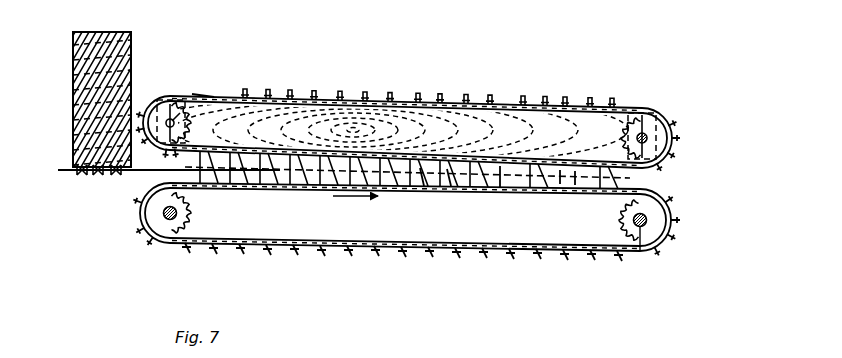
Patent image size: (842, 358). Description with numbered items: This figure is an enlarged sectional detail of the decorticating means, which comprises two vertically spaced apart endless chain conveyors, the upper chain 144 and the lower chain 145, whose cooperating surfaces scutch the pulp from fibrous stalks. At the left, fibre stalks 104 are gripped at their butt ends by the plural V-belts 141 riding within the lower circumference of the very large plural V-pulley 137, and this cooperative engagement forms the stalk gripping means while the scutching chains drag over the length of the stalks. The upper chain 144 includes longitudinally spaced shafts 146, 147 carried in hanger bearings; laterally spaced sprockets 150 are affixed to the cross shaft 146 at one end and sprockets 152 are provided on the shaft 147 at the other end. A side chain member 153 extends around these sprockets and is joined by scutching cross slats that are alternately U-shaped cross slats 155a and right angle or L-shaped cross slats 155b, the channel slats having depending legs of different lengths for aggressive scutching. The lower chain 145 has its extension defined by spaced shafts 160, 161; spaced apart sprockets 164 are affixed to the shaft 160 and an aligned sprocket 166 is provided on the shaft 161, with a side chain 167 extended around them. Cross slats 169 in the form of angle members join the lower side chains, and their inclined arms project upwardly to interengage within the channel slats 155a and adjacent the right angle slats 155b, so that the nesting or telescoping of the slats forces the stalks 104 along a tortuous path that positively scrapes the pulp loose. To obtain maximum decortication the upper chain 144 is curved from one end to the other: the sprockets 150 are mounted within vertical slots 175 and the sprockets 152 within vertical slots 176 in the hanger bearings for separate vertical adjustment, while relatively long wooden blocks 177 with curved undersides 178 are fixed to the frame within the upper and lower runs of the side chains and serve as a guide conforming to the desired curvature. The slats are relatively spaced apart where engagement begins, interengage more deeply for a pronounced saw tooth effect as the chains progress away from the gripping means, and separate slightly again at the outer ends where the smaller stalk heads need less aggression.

The fibre stalks 104 is at (67, 172).
The plural V-pulley 137 is at (136, 46).
The plural V-belts 141 is at (115, 177).
The upper chain 144 is at (355, 97).
The lower chain 145 is at (383, 254).
The shaft 146 is at (209, 97).
The shaft 147 is at (644, 133).
The sprockets 150 is at (147, 97).
The sprockets 152 is at (662, 128).
The side chain member 153 is at (523, 99).
The U-shaped cross slats 155a is at (478, 93).
The L-shaped cross slats 155b is at (348, 93).
The shaft 160 is at (170, 220).
The shaft 161 is at (638, 230).
The sprockets 164 is at (143, 231).
The sprocket 166 is at (660, 243).
The side chain 167 is at (433, 256).
The cross slats 169 is at (452, 187).
The vertical slots 175 is at (184, 100).
The vertical slots 176 is at (674, 146).
The wooden blocks 177 is at (580, 122).
The curved undersides 178 is at (240, 163).